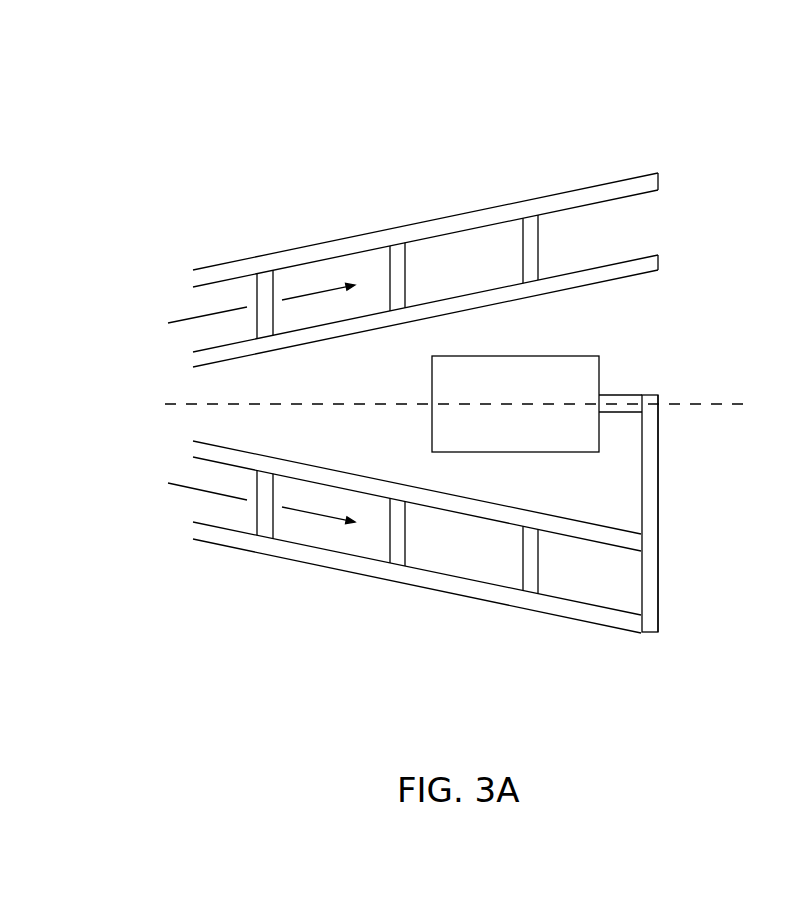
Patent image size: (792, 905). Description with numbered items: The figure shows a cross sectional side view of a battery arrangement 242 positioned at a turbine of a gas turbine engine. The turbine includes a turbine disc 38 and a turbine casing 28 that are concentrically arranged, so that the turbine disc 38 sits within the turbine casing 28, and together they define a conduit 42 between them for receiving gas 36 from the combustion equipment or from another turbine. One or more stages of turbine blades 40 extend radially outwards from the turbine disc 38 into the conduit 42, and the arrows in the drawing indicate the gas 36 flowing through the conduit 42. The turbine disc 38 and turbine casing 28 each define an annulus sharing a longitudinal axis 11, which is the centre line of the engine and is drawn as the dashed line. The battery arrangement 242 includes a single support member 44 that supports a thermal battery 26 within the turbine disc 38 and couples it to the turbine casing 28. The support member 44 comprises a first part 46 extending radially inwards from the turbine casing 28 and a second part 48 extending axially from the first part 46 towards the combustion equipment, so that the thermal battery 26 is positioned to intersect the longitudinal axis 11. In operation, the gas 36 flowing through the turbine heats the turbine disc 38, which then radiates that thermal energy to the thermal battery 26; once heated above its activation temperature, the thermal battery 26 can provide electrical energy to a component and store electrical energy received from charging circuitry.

The longitudinal axis 11 is at (713, 406).
The battery arrangement 242 is at (422, 404).
The thermal battery 26 is at (533, 441).
The turbine casing 28 is at (608, 192).
The gas 36 is at (182, 318).
The turbine disc 38 is at (663, 262).
The turbine blades 40 is at (262, 573).
The conduit 42 is at (486, 279).
The support member 44 is at (652, 513).
The first part 46 is at (658, 468).
The second part 48 is at (620, 395).